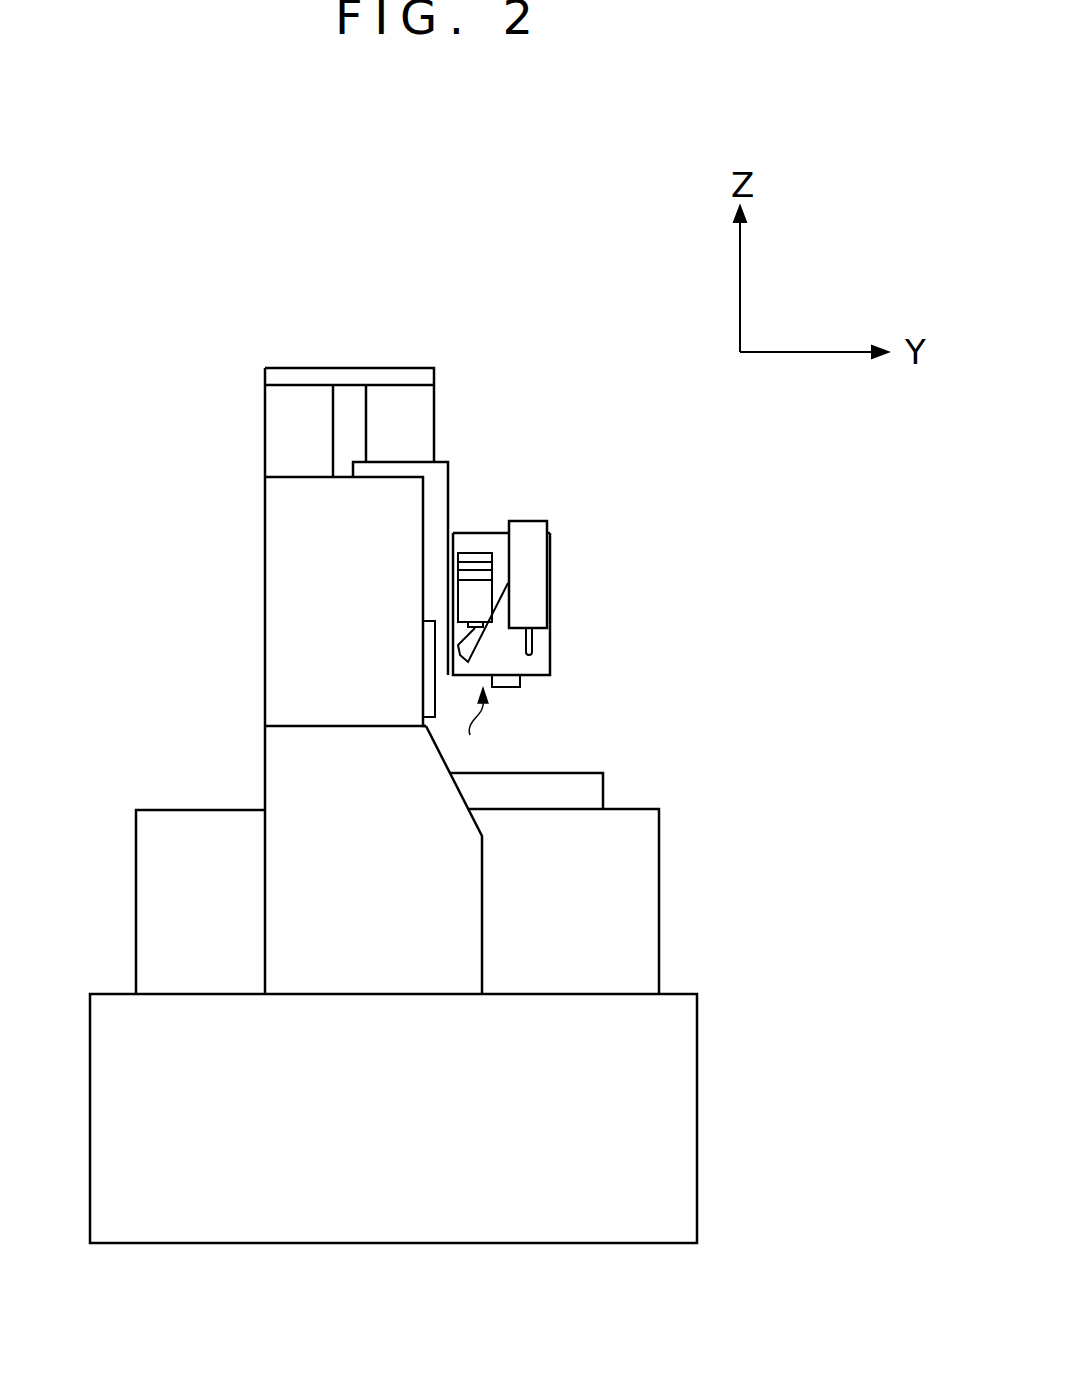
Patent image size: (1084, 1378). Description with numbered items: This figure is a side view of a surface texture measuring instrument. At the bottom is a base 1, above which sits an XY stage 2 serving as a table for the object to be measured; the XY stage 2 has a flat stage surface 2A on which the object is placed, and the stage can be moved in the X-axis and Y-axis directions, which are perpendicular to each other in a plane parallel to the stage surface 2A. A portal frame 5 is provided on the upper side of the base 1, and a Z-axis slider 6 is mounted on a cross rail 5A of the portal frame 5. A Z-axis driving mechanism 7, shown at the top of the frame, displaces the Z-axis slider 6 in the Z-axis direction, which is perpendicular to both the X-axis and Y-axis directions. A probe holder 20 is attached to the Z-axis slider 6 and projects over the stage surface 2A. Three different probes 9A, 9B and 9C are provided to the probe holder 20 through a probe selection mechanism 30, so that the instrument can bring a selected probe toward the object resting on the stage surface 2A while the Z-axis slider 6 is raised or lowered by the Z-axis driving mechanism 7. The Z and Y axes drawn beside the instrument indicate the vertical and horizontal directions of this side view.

The base 1 is at (559, 1243).
The XY stage 2 is at (603, 787).
The stage surface 2A is at (565, 773).
The portal frame 5 is at (268, 770).
The cross rail 5A is at (290, 578).
The Z-axis slider 6 is at (450, 475).
The Z-axis driving mechanism 7 is at (435, 395).
The probe 9A is at (483, 605).
The probe 9B is at (535, 546).
The probe 9C is at (520, 684).
The probe holder 20 is at (490, 530).
The probe selection mechanism 30 is at (471, 729).